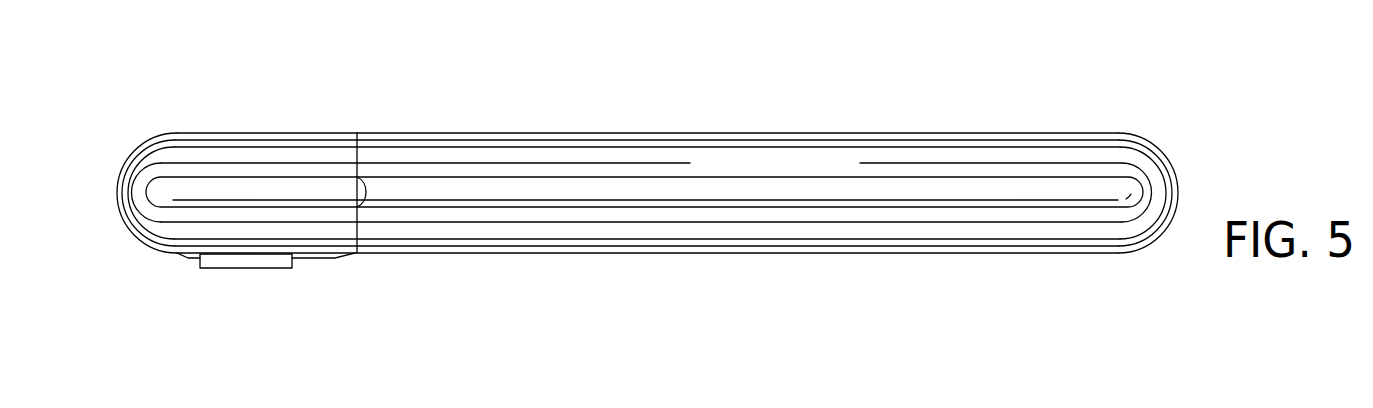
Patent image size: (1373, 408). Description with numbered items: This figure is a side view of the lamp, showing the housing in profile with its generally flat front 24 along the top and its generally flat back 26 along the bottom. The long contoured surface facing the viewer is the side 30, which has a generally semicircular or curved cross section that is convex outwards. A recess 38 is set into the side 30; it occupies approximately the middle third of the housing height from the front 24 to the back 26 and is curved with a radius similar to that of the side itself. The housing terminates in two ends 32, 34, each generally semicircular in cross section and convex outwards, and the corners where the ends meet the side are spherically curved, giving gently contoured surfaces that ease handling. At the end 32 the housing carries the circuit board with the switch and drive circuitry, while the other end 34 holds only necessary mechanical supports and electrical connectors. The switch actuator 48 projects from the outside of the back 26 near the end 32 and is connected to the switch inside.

The front 24 is at (714, 121).
The back 26 is at (704, 268).
The side 30 is at (962, 187).
The end 32 is at (124, 166).
The end 34 is at (1174, 170).
The recess 38 is at (548, 193).
The switch actuator 48 is at (265, 262).